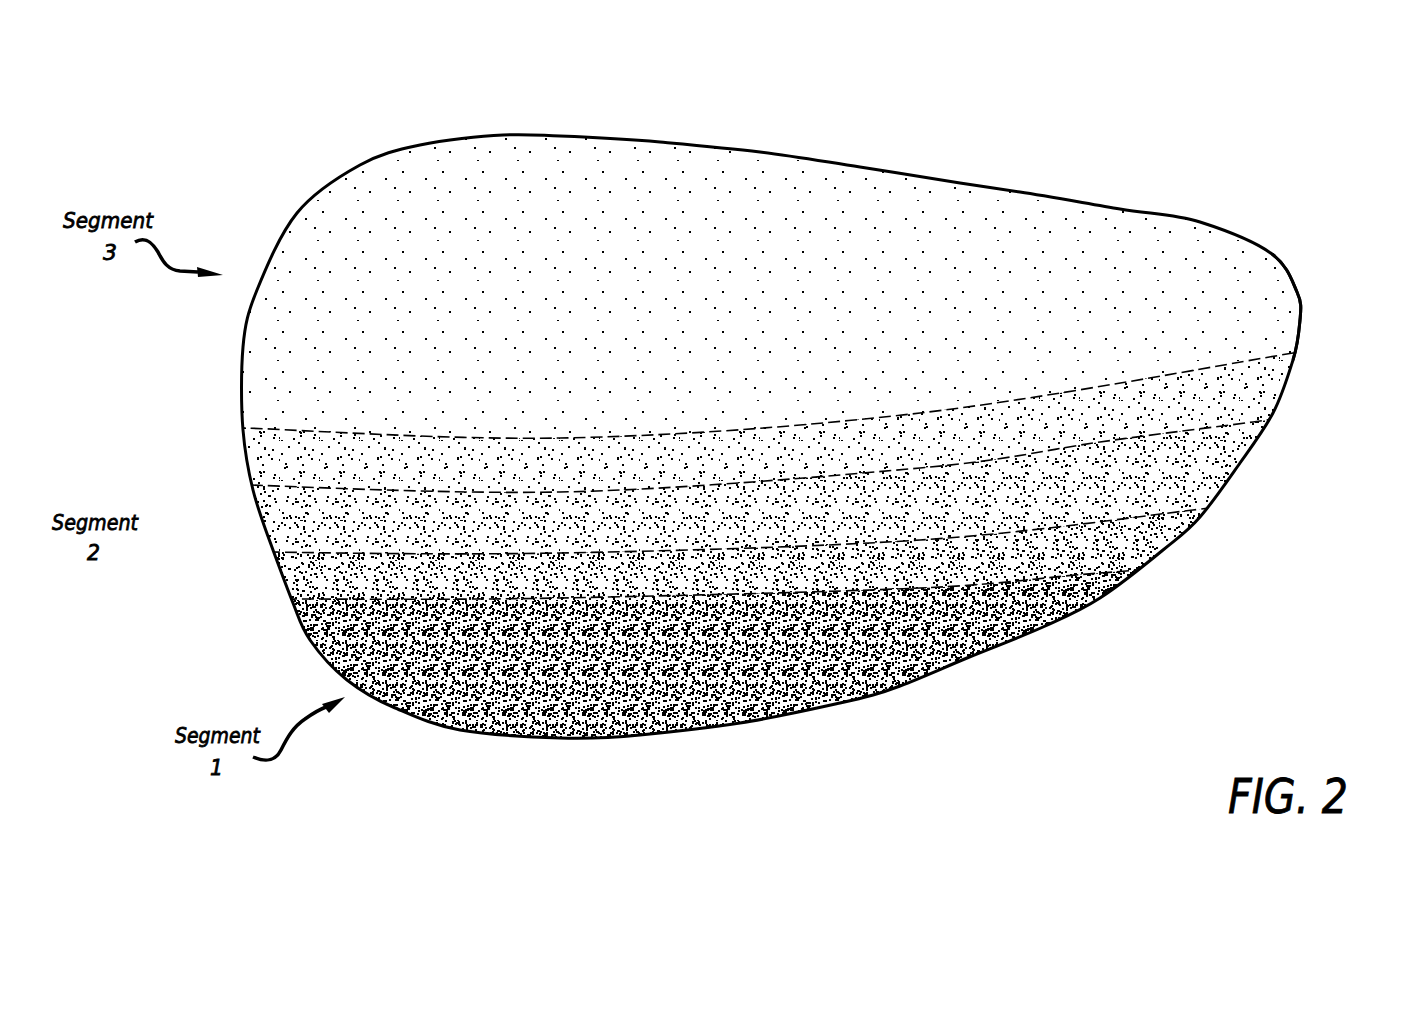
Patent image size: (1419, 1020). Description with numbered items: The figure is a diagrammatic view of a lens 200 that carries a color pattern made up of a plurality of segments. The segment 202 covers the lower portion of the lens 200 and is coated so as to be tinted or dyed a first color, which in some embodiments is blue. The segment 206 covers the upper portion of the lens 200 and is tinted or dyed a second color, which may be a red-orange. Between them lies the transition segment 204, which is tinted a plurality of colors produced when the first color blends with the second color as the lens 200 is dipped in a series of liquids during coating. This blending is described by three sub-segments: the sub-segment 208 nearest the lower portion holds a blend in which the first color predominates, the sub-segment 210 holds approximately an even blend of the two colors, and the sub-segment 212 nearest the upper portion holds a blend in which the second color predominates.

The lens 200 is at (1286, 200).
The segment 202 is at (1045, 627).
The transition segment 204 is at (262, 603).
The segment 206 is at (1296, 296).
The sub-segment 208 is at (1133, 545).
The sub-segment 210 is at (1208, 467).
The sub-segment 212 is at (1265, 386).